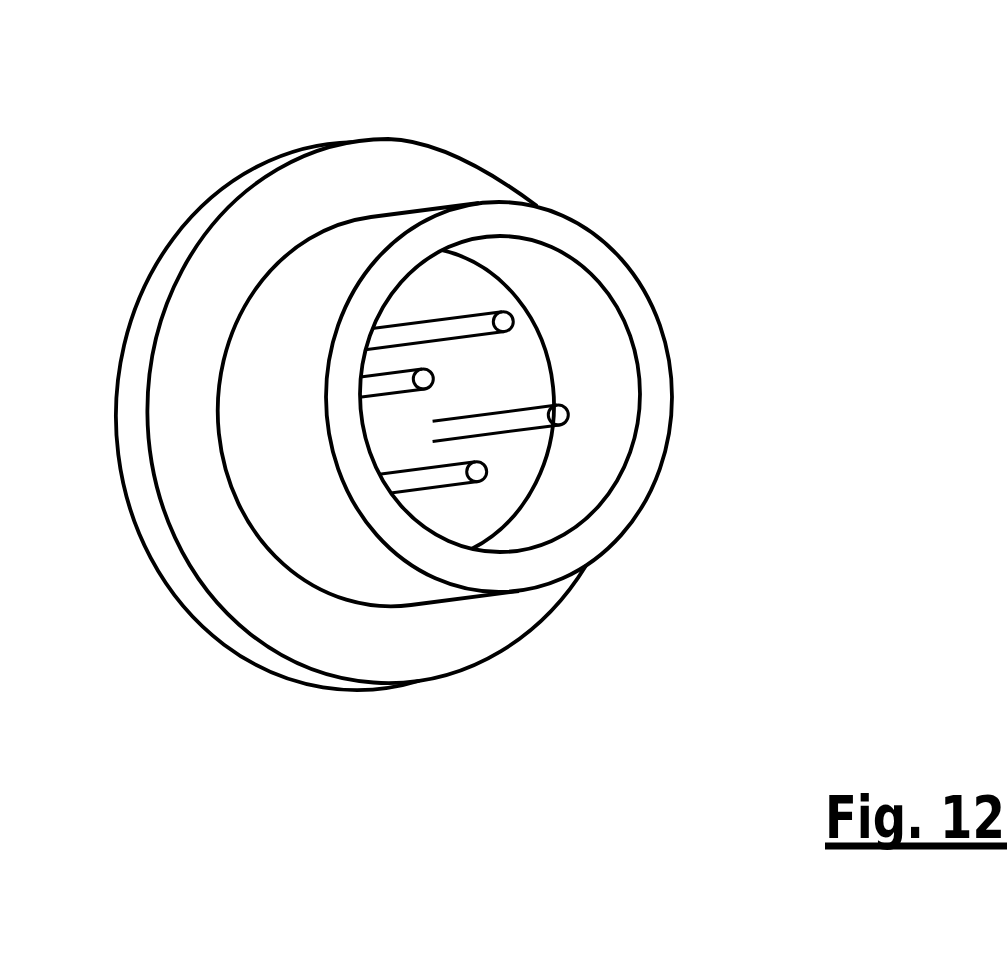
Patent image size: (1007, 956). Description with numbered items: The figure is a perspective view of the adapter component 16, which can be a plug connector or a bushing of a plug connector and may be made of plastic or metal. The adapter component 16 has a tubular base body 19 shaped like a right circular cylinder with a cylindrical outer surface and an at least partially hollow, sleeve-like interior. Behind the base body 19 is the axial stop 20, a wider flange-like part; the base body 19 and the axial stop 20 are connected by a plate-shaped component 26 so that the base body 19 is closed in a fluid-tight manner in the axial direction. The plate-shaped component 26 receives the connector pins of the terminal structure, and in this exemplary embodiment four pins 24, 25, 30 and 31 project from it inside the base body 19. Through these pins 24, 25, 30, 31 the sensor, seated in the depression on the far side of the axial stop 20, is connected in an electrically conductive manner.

The adapter component 16 is at (438, 187).
The tubular base body 19 is at (580, 255).
The axial stop 20 is at (328, 172).
The pin 24 is at (482, 470).
The pin 25 is at (508, 322).
The plate-shaped component 26 is at (480, 515).
The pin 30 is at (562, 414).
The pin 31 is at (423, 380).